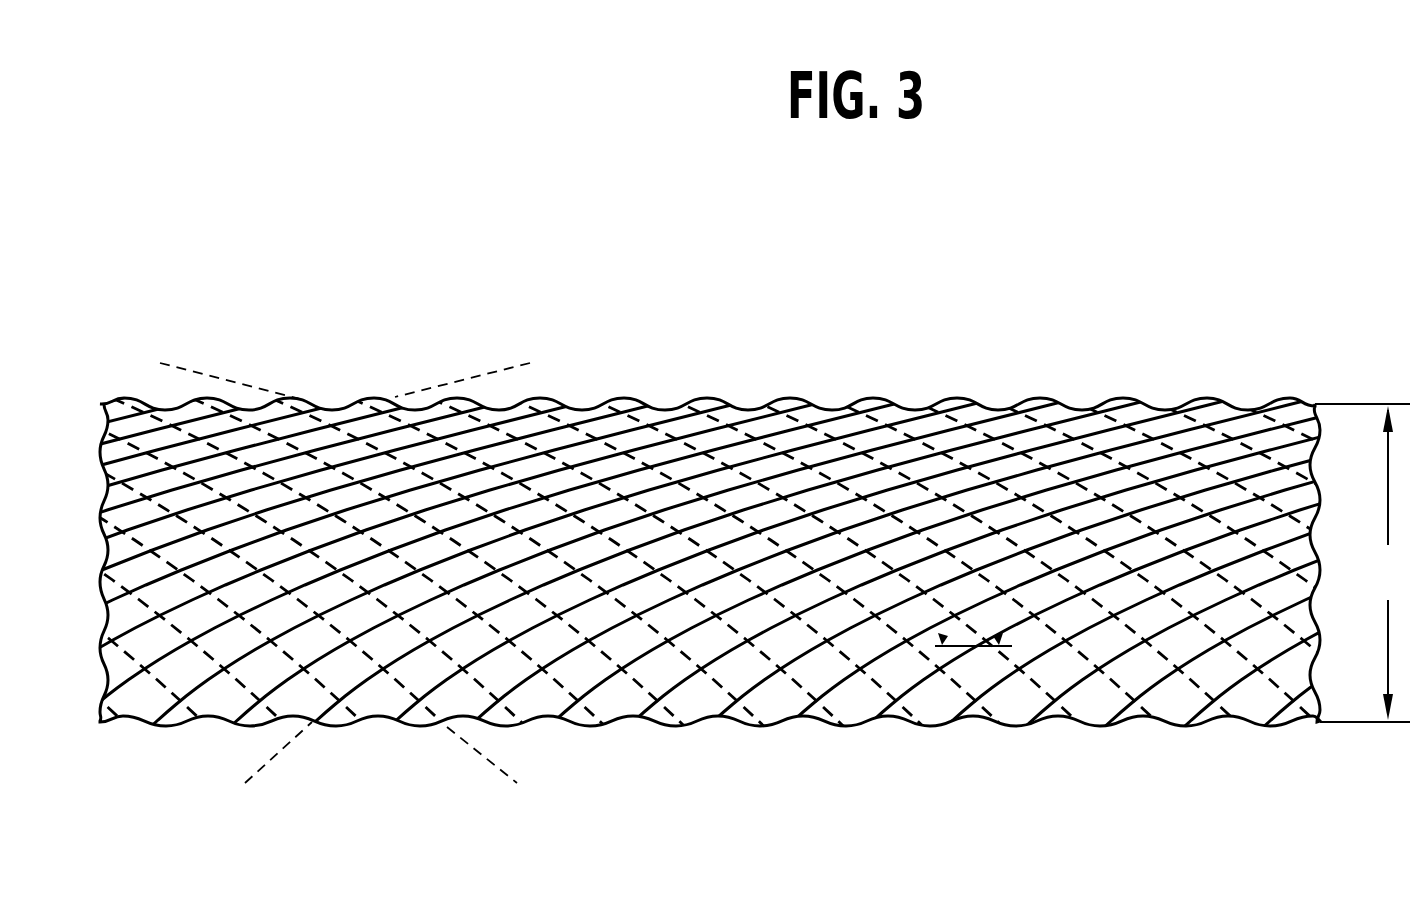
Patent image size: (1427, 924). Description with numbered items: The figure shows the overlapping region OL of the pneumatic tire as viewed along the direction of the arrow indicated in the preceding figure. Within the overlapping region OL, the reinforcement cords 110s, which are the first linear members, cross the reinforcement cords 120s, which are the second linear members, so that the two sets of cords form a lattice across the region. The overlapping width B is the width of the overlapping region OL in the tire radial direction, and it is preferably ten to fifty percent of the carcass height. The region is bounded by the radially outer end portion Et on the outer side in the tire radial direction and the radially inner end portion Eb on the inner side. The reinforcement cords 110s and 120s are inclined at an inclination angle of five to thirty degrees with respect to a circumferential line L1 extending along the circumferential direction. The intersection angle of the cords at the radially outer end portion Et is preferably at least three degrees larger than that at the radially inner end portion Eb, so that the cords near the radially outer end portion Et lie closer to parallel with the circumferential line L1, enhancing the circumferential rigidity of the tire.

The reinforcement cords 120s is at (565, 648).
The reinforcement cords 110s is at (745, 720).
The overlapping region OL is at (1183, 362).
The radially outer end portion Et is at (1358, 405).
The radially inner end portion Eb is at (1372, 723).
The overlapping width B is at (1391, 563).
The circumferential line L1 is at (997, 646).